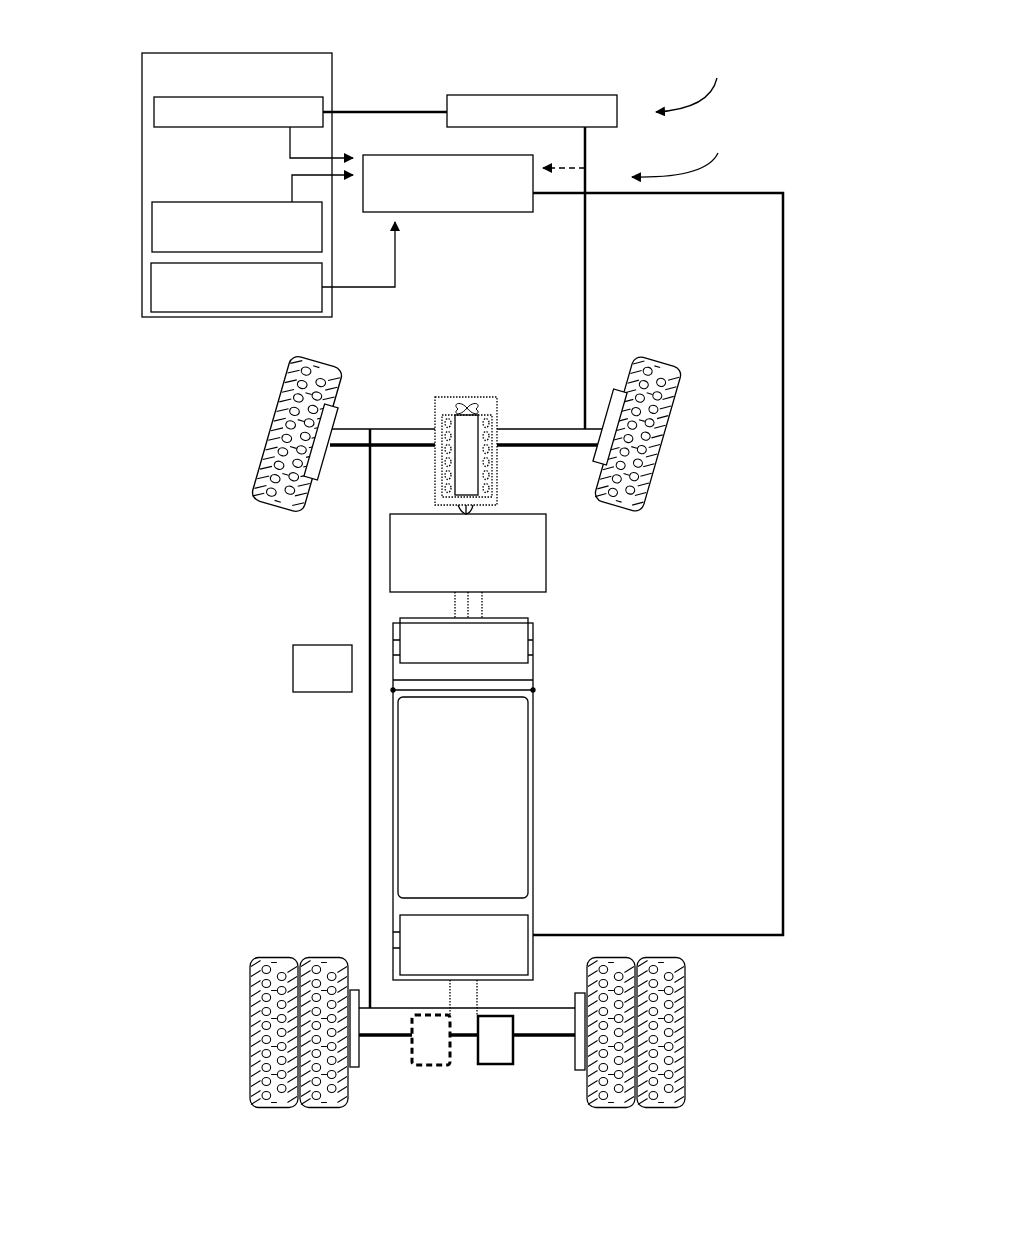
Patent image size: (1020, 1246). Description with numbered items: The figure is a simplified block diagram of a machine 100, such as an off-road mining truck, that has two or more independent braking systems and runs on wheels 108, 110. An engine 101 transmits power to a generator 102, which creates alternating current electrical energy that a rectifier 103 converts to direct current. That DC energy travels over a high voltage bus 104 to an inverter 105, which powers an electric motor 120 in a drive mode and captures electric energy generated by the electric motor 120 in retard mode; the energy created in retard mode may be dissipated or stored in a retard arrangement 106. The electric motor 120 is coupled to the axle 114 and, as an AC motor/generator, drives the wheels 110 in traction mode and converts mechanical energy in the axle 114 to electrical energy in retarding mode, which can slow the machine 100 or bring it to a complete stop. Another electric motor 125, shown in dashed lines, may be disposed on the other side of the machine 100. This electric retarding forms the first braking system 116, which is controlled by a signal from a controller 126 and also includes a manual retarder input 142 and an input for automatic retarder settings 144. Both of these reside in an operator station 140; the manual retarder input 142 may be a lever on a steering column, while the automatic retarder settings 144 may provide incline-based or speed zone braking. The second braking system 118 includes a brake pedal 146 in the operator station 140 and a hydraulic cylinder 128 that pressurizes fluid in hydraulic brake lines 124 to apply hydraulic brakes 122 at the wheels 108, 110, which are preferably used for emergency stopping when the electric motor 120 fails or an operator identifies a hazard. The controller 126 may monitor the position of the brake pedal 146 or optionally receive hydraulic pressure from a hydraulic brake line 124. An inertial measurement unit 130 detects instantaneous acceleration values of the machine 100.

The machine 100 is at (470, 25).
The engine 101 is at (462, 397).
The generator 102 is at (547, 577).
The rectifier 103 is at (525, 648).
The high voltage bus 104 is at (504, 796).
The inverter 105 is at (528, 920).
The retard arrangement 106 is at (523, 790).
The wheels 108 is at (260, 458).
The wheels 110 is at (248, 1022).
The axle 114 is at (535, 1037).
The first braking system 116 is at (689, 151).
The second braking system 118 is at (695, 79).
The electric motor 120 is at (498, 1065).
The hydraulic brakes 122 is at (338, 410).
The hydraulic brake lines 124 is at (585, 238).
The electric motor 125 is at (430, 1065).
The controller 126 is at (445, 212).
The hydraulic cylinder 128 is at (522, 95).
The inertial measurement unit 130 is at (293, 668).
The operator station 140 is at (242, 53).
The manual retarder input 142 is at (152, 238).
The automatic retarder settings 144 is at (151, 297).
The brake pedal 146 is at (154, 118).